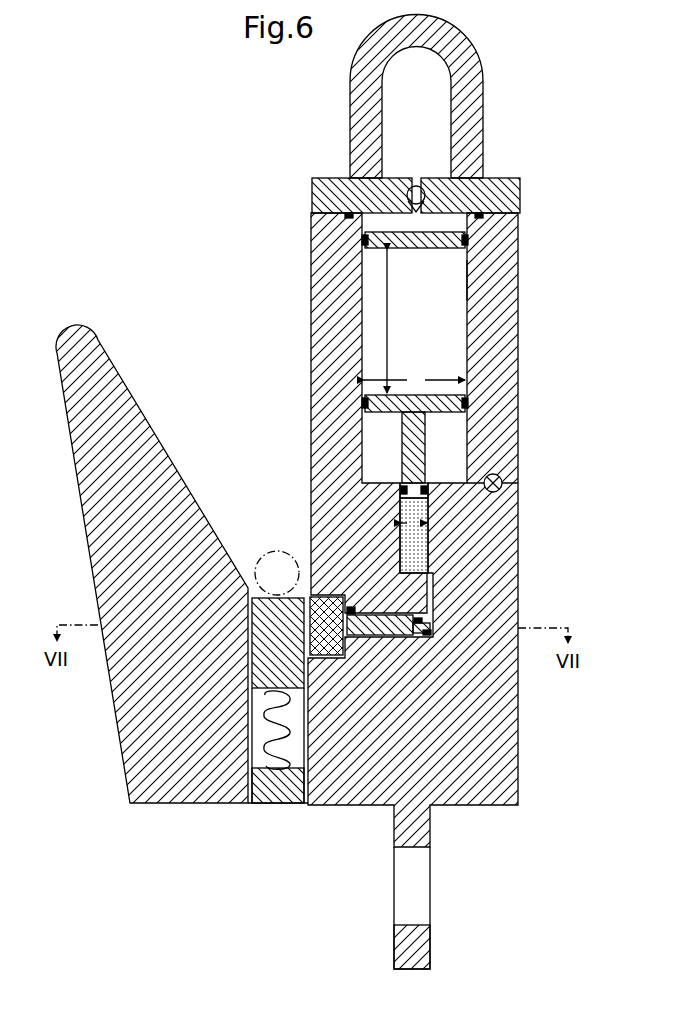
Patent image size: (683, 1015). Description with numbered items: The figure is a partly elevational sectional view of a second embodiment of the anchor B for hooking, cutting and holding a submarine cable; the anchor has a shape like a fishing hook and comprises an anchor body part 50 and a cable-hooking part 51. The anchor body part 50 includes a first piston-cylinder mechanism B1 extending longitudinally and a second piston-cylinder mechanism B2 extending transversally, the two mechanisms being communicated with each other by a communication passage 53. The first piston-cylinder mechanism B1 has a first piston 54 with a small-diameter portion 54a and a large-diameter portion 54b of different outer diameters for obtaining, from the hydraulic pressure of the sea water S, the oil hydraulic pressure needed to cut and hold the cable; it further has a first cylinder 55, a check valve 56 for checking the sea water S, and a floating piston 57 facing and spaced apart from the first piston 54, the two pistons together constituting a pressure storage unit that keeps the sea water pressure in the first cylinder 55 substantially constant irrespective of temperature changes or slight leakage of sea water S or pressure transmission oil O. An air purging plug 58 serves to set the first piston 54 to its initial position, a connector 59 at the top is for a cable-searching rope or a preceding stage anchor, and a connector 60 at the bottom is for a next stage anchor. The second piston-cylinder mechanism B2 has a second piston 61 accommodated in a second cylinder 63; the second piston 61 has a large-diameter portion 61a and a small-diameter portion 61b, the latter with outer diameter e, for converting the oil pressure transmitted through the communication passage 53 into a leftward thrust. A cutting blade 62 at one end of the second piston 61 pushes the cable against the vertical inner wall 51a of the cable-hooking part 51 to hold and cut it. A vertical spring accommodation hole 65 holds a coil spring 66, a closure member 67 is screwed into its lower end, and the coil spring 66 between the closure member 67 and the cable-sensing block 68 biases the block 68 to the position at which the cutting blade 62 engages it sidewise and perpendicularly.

The anchor body part 50 is at (490, 518).
The cable-hooking part 51 is at (108, 385).
The vertical inner wall 51a is at (335, 603).
The communication passage 53 is at (433, 612).
The first piston 54 is at (410, 425).
The small-diameter portion 54a is at (403, 450).
The large-diameter portion 54b is at (363, 395).
The first cylinder 55 is at (470, 278).
The check valve 56 is at (409, 188).
The floating piston 57 is at (443, 233).
The air purging plug 58 is at (500, 475).
The connector 59 is at (473, 47).
The connector 60 is at (430, 888).
The second piston 61 is at (423, 620).
The large-diameter portion 61a is at (408, 642).
The small-diameter portion 61b is at (430, 642).
The cutting blade 62 is at (352, 608).
The second cylinder 63 is at (377, 642).
The spring accommodation hole 65 is at (253, 720).
The coil spring 66 is at (197, 800).
The closure member 67 is at (275, 790).
The cable-sensing block 68 is at (265, 646).
The pressure transmission oil O is at (417, 550).
The sea water S is at (416, 158).
The outer diameter e is at (420, 642).
The anchor B is at (530, 128).
The first piston-cylinder mechanism B1 is at (484, 366).
The second piston-cylinder mechanism B2 is at (338, 576).